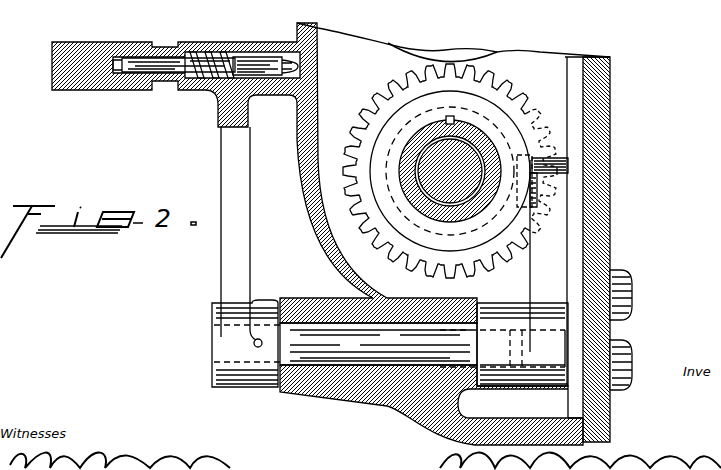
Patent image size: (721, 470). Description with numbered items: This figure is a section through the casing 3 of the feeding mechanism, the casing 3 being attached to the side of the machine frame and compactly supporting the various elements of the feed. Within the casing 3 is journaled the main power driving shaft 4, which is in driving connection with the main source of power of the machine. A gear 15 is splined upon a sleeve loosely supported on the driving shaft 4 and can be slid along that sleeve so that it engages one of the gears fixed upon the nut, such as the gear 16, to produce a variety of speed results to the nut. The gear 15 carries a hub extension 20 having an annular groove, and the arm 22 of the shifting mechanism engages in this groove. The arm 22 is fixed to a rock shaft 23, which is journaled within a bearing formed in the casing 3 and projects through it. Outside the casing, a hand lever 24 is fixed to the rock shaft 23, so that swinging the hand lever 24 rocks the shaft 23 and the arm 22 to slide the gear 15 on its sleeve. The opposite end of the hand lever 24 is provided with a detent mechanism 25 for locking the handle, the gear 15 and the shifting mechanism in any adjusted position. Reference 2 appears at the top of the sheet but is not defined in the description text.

The gear casing 2 is at (360, 235).
The casing 3 is at (303, 158).
The main power driving shaft 4 is at (470, 147).
The gear 15 is at (382, 93).
The gear 16 is at (387, 47).
The hub extension 20 is at (480, 103).
The arm 22 is at (557, 258).
The rock shaft 23 is at (372, 357).
The hand lever 24 is at (226, 270).
The detent mechanism 25 is at (243, 63).